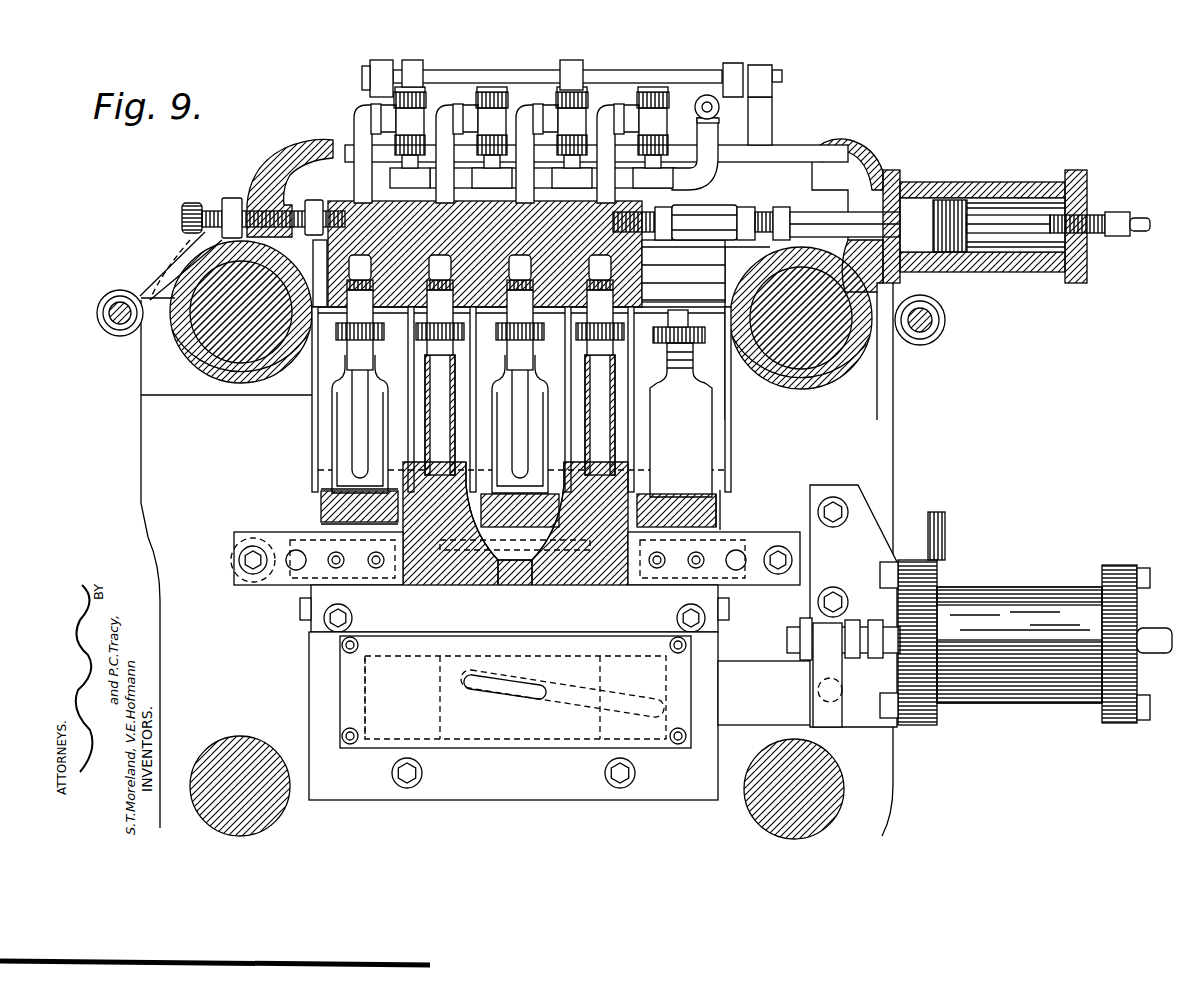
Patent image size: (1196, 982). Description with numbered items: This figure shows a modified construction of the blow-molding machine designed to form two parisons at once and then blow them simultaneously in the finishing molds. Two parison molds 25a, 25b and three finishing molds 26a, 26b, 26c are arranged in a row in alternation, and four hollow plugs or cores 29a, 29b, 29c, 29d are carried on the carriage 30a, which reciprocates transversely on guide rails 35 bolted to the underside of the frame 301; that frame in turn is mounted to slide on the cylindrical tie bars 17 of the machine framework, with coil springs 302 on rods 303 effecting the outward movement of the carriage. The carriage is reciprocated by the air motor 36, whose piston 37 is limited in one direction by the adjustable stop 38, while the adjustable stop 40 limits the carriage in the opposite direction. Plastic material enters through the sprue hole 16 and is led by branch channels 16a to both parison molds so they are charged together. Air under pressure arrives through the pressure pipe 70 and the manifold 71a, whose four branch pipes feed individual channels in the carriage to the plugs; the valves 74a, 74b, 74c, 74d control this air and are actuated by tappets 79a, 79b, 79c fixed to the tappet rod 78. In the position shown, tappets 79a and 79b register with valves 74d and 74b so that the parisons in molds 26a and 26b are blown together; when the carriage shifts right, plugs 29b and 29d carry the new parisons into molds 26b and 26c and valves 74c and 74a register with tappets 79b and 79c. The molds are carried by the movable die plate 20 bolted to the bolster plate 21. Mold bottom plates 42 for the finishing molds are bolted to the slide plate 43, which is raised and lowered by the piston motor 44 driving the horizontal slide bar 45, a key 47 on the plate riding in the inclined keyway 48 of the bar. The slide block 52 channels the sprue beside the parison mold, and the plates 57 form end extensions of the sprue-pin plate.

The sprue hole 16 is at (525, 556).
The branch channels 16a is at (745, 530).
The tie bars 17 is at (210, 348).
The movable die plate 20 is at (527, 793).
The bolster plate 21 is at (150, 450).
The parison mold 25a is at (410, 433).
The parison mold 25b is at (620, 430).
The finishing mold 26a is at (330, 400).
The finishing mold 26b is at (485, 385).
The finishing mold 26c is at (727, 392).
The plug 29a is at (353, 410).
The plug 29b is at (437, 390).
The plug 29c is at (527, 412).
The plug 29d is at (605, 397).
The carriage 30a is at (342, 206).
The guide rails 35 is at (717, 268).
The air motor 36 is at (998, 188).
The piston 37 is at (947, 200).
The adjustable stop 38 is at (1090, 210).
The adjustable stop 40 is at (238, 195).
The bottom plates 42 is at (320, 490).
The slide plate 43 is at (718, 508).
The piston motor 44 is at (1005, 700).
The slide bar 45 is at (745, 726).
The key 47 is at (475, 695).
The keyway 48 is at (505, 708).
The slide block 52 is at (320, 506).
The plates 57 is at (269, 587).
The pressure pipe 70 is at (719, 108).
The manifold 71a is at (675, 188).
The valve 74a is at (660, 86).
The valve 74b is at (548, 88).
The valve 74c is at (510, 64).
The valve 74d is at (428, 88).
The tappet rod 78 is at (632, 72).
The tappet 79a is at (410, 62).
The tappet 79b is at (582, 64).
The tappet 79c is at (738, 64).
The frame 301 is at (285, 138).
The coil springs 302 is at (112, 318).
The rods 303 is at (120, 324).